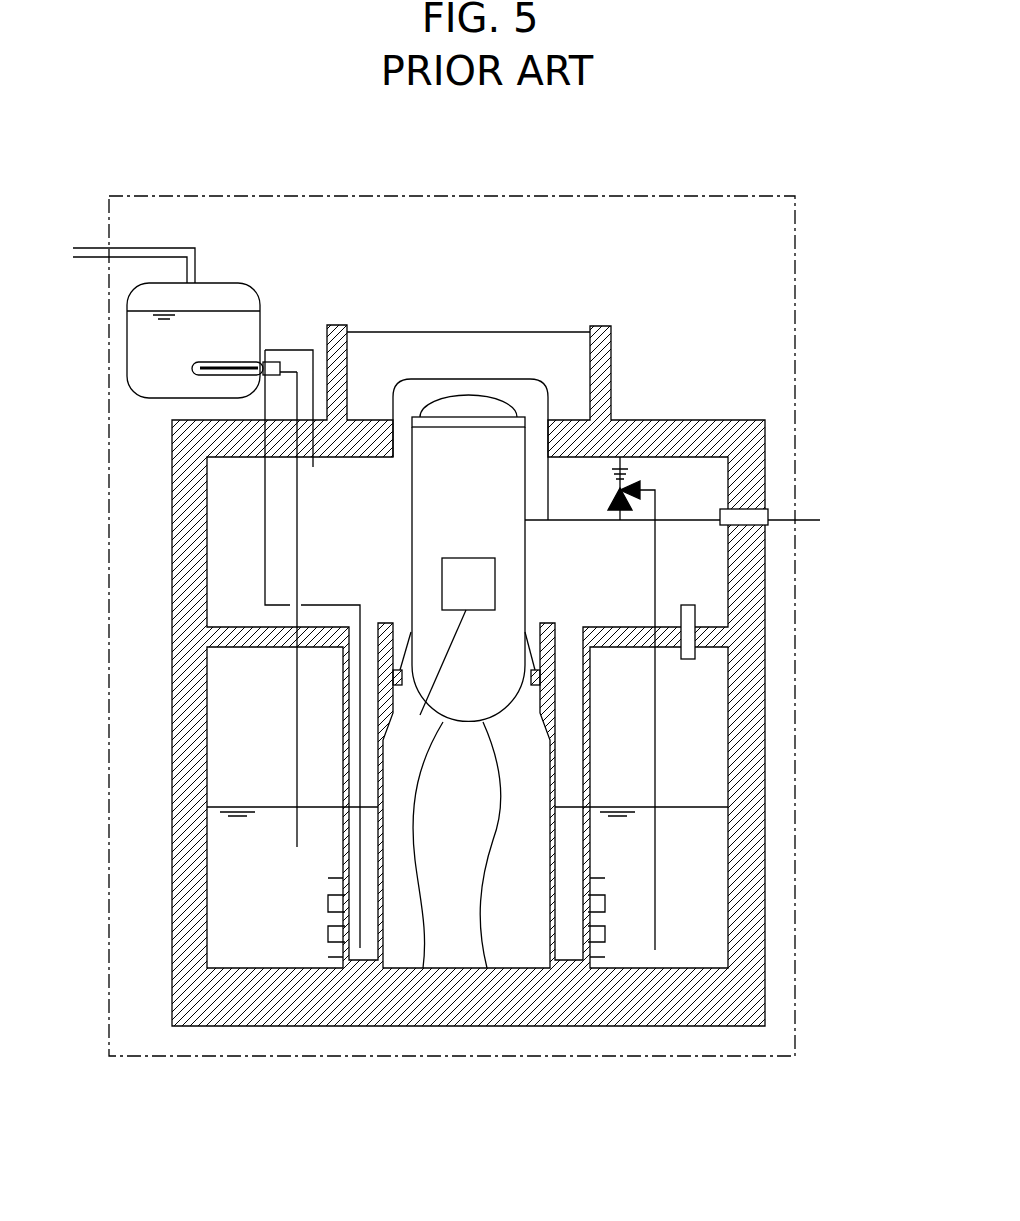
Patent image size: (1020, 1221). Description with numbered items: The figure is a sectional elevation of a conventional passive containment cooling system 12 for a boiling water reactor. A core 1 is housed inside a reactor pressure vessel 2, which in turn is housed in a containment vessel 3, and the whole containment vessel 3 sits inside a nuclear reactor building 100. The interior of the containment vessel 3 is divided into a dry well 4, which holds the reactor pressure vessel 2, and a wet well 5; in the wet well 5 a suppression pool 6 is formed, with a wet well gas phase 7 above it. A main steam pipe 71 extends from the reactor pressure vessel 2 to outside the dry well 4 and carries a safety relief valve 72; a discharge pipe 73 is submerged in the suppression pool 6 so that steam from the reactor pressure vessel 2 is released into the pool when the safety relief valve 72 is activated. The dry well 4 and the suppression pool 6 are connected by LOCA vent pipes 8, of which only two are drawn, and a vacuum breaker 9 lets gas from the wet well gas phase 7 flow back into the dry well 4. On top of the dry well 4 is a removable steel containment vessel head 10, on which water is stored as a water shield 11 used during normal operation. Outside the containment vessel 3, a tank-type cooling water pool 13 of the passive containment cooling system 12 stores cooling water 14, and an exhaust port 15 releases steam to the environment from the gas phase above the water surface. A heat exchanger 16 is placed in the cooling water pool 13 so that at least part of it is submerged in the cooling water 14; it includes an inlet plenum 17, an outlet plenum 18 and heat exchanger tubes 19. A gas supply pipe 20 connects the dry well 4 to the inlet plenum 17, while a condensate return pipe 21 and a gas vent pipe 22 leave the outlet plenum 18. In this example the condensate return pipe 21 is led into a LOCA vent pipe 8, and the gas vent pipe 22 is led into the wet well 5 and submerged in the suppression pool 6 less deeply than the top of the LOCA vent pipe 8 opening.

The nuclear reactor building 100 is at (535, 193).
The core 1 is at (423, 968).
The reactor pressure vessel 2 is at (487, 968).
The containment vessel 3 is at (735, 420).
The dry well 4 is at (247, 513).
The wet well 5 is at (130, 757).
The suppression pool 6 is at (277, 875).
The wet well gas phase 7 is at (275, 767).
The LOCA vent pipe 8 is at (573, 887).
The vacuum breaker 9 is at (705, 655).
The containment vessel head 10 is at (458, 380).
The water shield 11 is at (530, 352).
The passive containment cooling system 12 is at (273, 235).
The cooling water pool 13 is at (223, 283).
The cooling water 14 is at (177, 345).
The exhaust port 15 is at (170, 248).
The heat exchanger 16 is at (213, 348).
The inlet plenum 17 is at (262, 362).
The outlet plenum 18 is at (266, 372).
The heat exchanger tube 19 is at (210, 380).
The gas supply pipe 20 is at (298, 350).
The condensate return pipe 21 is at (265, 575).
The gas vent pipe 22 is at (295, 727).
The main steam pipe 71 is at (683, 517).
The safety relief valve 72 is at (641, 467).
The discharge pipe 73 is at (655, 748).